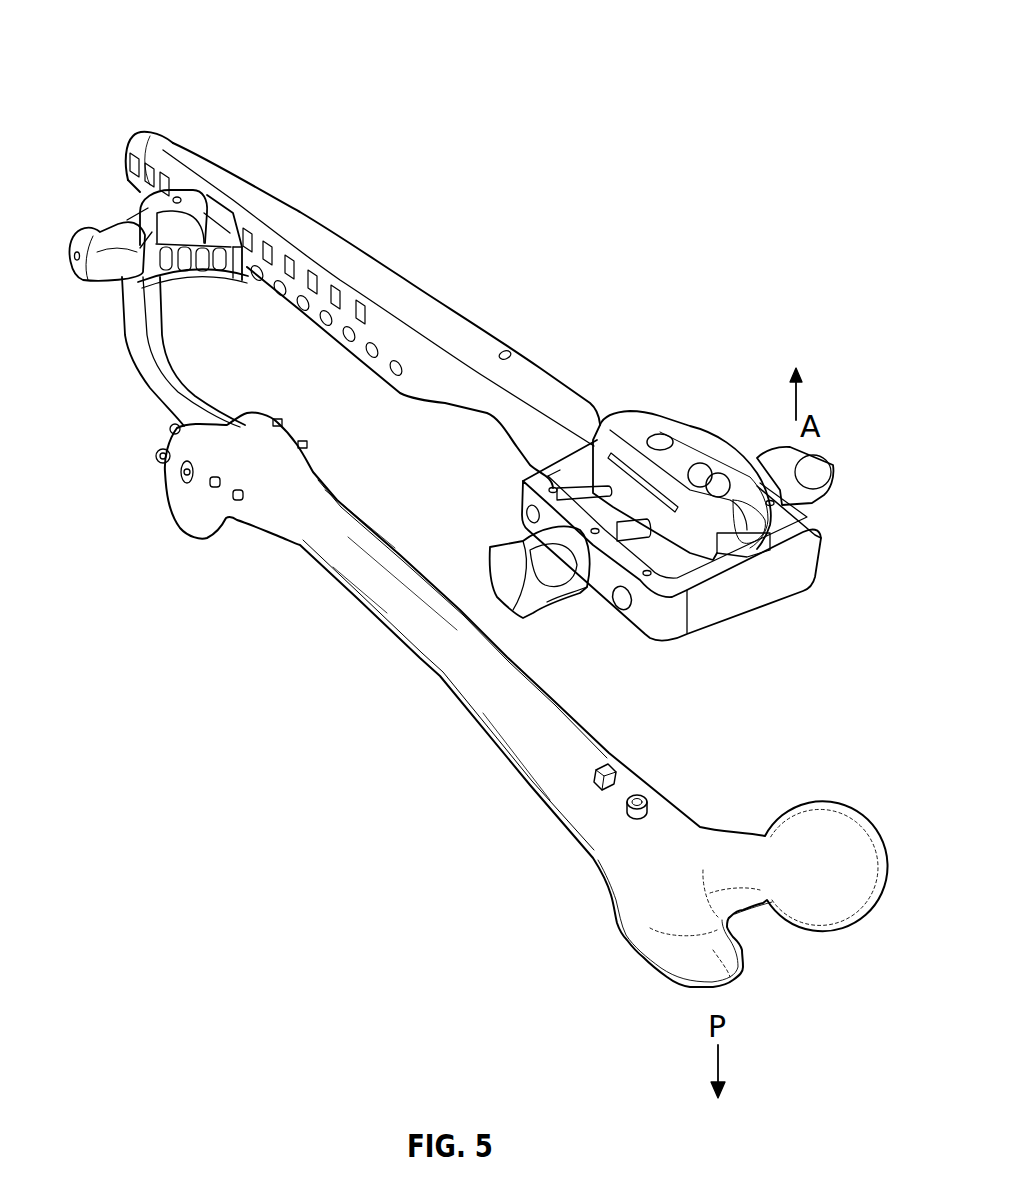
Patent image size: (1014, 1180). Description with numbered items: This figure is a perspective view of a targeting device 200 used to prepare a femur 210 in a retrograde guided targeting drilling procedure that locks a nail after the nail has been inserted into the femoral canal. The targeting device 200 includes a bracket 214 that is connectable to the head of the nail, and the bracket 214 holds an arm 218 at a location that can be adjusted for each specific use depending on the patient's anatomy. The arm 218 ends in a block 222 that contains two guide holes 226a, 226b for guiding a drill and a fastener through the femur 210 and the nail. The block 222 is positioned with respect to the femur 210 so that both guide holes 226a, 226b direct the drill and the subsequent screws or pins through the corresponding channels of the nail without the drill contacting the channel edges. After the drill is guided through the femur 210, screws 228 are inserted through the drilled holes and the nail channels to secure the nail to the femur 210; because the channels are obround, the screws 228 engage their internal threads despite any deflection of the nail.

The targeting device 200 is at (128, 72).
The femur 210 is at (428, 642).
The bracket 214 is at (143, 365).
The arm 218 is at (404, 277).
The block 222 is at (822, 512).
The guide hole 226a is at (662, 441).
The guide hole 226b is at (704, 474).
The screws 228 is at (640, 797).